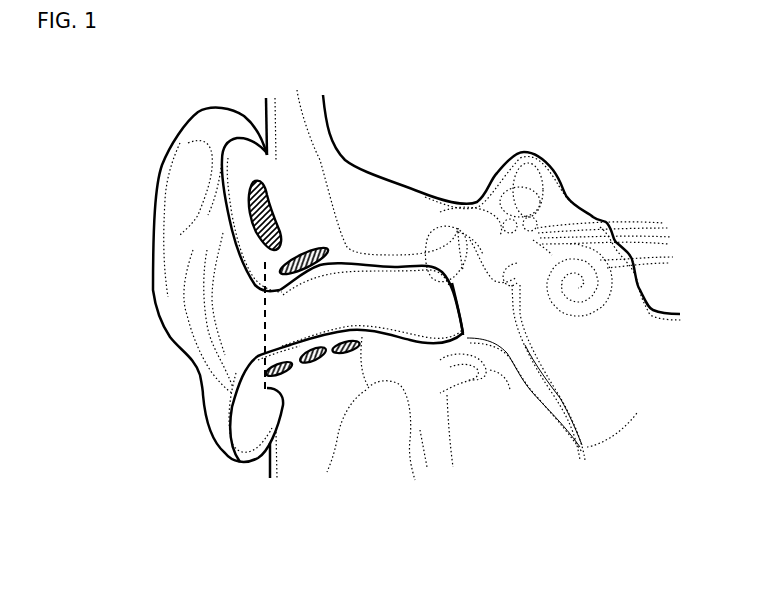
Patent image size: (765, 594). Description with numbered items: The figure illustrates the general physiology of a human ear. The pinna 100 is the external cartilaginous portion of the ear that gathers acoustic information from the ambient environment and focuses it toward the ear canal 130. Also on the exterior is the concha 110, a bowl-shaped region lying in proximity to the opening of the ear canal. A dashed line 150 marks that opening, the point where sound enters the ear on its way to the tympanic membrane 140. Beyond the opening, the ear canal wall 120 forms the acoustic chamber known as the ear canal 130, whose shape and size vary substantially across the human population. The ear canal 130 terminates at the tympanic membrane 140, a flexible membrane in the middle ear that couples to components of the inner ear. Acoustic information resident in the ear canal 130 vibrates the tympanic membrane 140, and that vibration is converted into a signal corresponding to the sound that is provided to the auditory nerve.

The pinna 100 is at (131, 376).
The concha 110 is at (230, 300).
The ear canal wall 120 is at (302, 274).
The ear canal 130 is at (312, 310).
The tympanic membrane 140 is at (457, 285).
The dashed line 150 is at (255, 461).